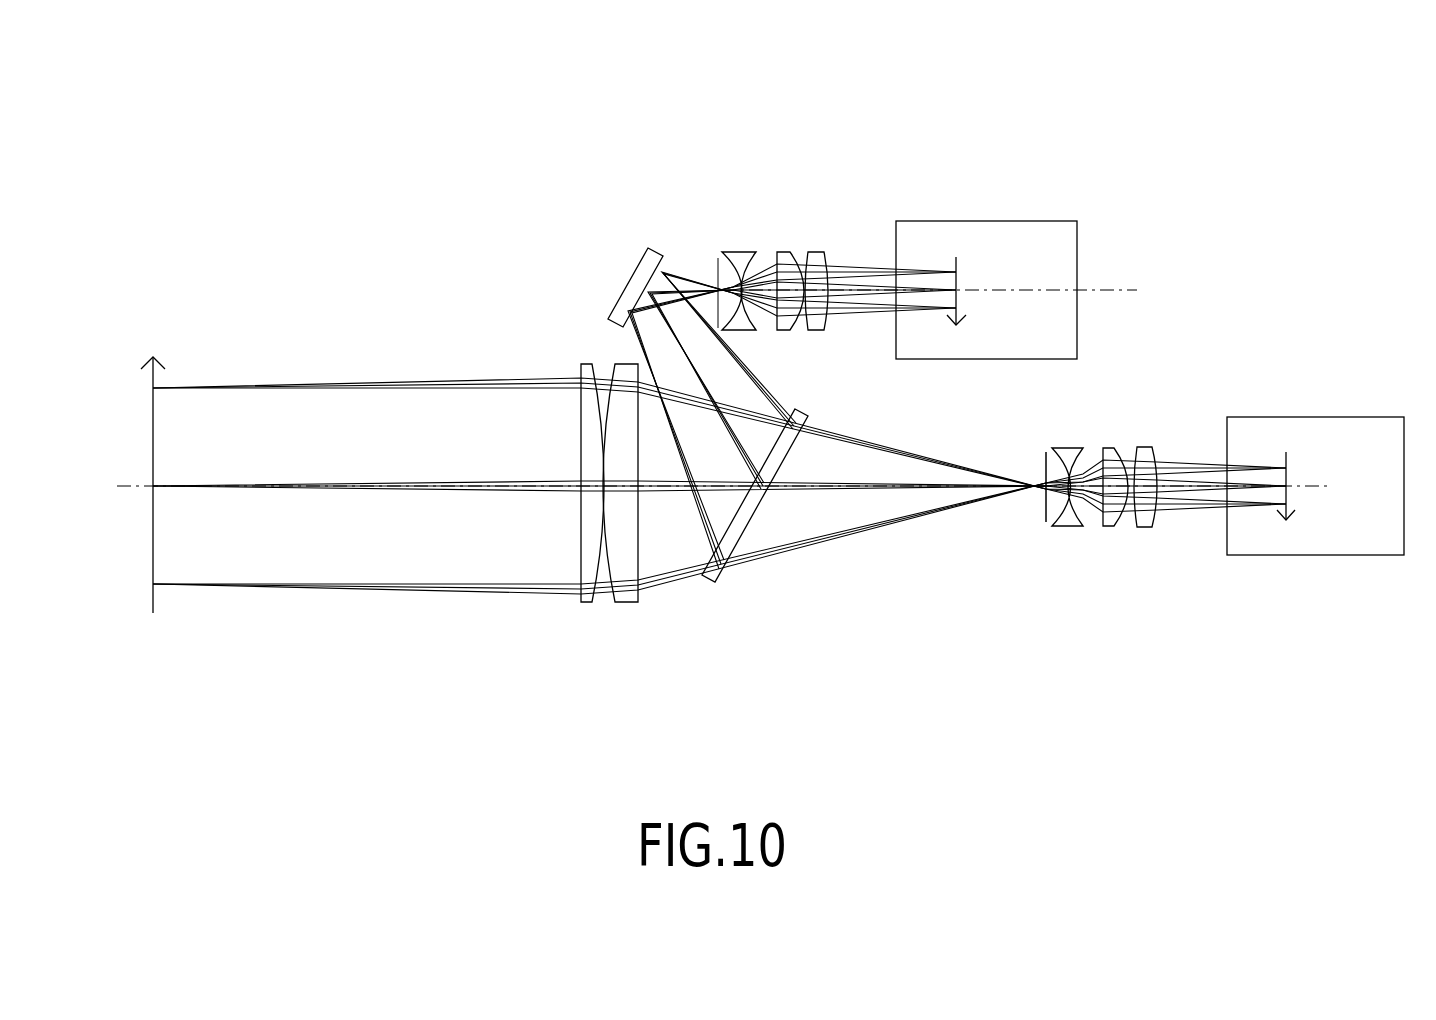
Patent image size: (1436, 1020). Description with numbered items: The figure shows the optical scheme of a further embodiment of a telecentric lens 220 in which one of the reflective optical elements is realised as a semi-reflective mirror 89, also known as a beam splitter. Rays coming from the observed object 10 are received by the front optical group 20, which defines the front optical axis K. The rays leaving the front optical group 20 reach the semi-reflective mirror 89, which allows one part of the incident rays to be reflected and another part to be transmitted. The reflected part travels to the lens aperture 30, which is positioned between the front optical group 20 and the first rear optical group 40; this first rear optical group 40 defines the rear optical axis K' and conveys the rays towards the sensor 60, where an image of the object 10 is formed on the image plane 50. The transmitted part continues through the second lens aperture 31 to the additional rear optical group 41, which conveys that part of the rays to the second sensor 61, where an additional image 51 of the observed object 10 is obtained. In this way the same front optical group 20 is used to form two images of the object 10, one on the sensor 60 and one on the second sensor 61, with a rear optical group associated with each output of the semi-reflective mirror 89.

The telecentric lens 220 is at (280, 213).
The observed object 10 is at (153, 421).
The front optical axis K is at (110, 526).
The front optical group 20 is at (631, 603).
The semi-reflective mirror 89 is at (720, 578).
The lens aperture 30 is at (718, 266).
The first rear optical group 40 is at (812, 249).
The image plane 50 is at (956, 261).
The sensor 60 is at (1043, 219).
The rear optical axis K' is at (1285, 405).
The second lens aperture 31 is at (1045, 510).
The rear optical group 41 is at (1145, 533).
The additional image 51 is at (1287, 455).
The second sensor 61 is at (1257, 559).